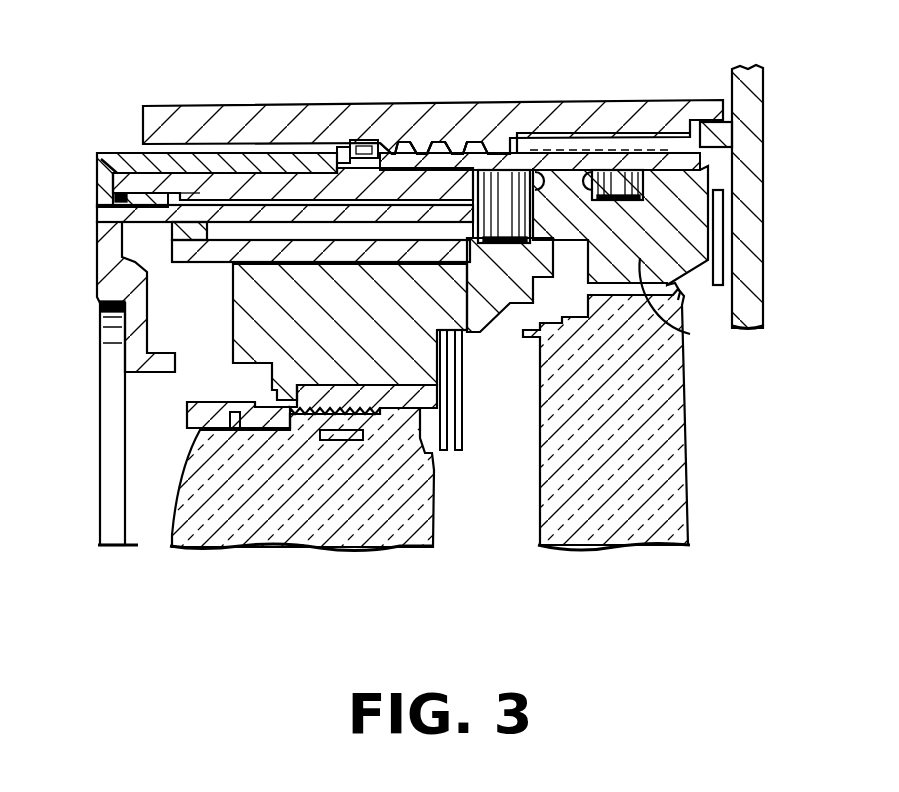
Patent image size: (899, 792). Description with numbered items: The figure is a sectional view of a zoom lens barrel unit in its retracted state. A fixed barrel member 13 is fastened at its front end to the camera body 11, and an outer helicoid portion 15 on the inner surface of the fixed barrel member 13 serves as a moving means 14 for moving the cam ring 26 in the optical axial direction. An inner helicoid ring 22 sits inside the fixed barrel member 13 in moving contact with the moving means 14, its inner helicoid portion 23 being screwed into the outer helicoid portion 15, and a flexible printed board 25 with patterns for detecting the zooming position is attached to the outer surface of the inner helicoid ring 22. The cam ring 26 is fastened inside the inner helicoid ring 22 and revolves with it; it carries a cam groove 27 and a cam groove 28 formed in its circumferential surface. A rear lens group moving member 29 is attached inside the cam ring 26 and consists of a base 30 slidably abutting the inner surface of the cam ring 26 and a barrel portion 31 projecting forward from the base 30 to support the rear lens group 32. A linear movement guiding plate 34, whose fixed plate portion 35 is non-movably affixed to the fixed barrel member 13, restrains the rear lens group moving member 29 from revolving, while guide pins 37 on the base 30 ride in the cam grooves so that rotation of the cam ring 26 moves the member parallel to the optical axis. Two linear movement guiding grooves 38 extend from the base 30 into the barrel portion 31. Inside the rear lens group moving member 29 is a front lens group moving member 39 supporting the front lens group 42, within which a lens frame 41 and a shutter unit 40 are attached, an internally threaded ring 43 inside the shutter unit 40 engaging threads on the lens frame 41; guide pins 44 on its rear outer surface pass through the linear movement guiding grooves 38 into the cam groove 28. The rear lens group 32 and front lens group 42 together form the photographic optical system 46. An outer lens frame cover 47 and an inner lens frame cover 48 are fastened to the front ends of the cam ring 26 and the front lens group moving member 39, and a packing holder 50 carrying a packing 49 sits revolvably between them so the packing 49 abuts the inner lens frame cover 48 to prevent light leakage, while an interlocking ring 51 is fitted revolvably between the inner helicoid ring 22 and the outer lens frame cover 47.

The camera body 11 is at (765, 100).
The fixed barrel member 13 is at (173, 106).
The moving means 14 is at (439, 122).
The outer helicoid portion 15 is at (420, 140).
The inner helicoid ring 22 is at (367, 157).
The inner helicoid portion 23 is at (400, 143).
The flexible printed board 25 is at (662, 138).
The cam ring 26 is at (225, 182).
The cam groove 27 is at (577, 157).
The cam groove 28 is at (539, 170).
The rear lens group moving member 29 is at (680, 252).
The base 30 is at (688, 334).
The barrel portion 31 is at (173, 230).
The rear lens group 32 is at (617, 530).
The linear movement guiding plate 34 is at (725, 203).
The fixed plate portion 35 is at (721, 235).
The guide pin 37 is at (613, 173).
The linear movement guiding groove 38 is at (283, 230).
The front lens group moving member 39 is at (490, 310).
The shutter unit 40 is at (243, 308).
The lens frame 41 is at (192, 413).
The front lens group 42 is at (305, 530).
The internally threaded ring 43 is at (425, 398).
The guide pin 44 is at (495, 173).
The photographic optical system 46 is at (155, 496).
The outer lens frame cover 47 is at (133, 153).
The inner lens frame cover 48 is at (107, 290).
The packing 49 is at (115, 198).
The packing holder 50 is at (117, 158).
The interlocking ring 51 is at (342, 140).